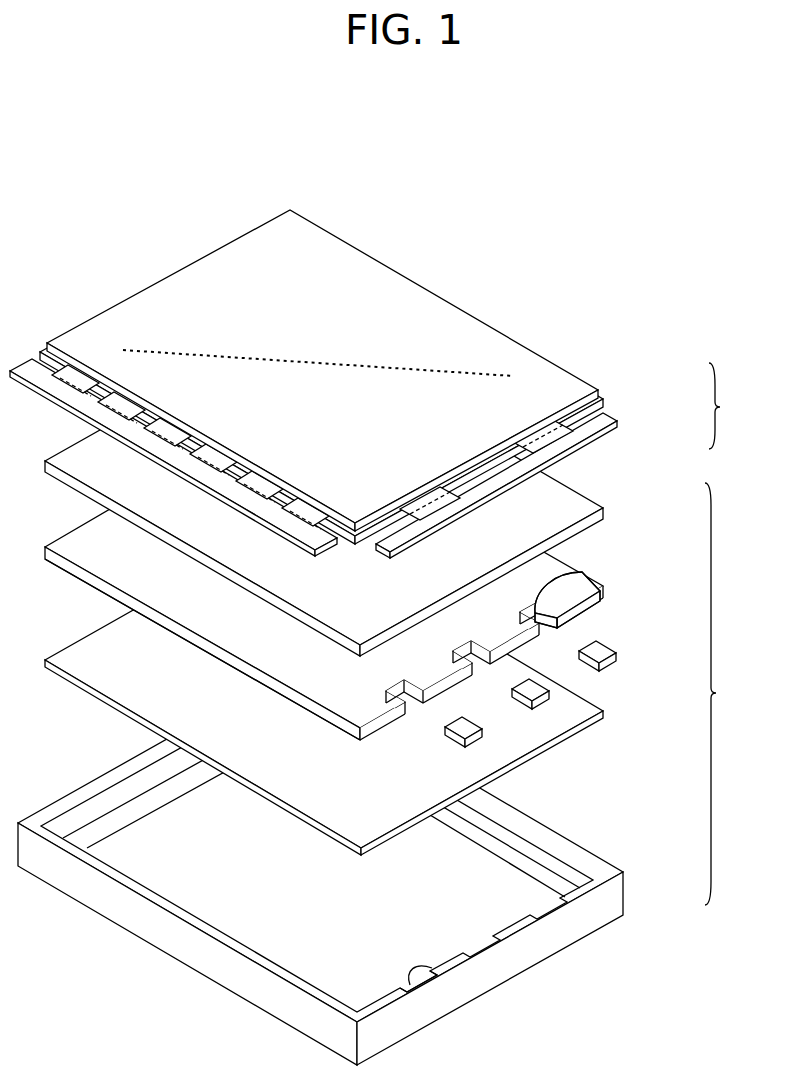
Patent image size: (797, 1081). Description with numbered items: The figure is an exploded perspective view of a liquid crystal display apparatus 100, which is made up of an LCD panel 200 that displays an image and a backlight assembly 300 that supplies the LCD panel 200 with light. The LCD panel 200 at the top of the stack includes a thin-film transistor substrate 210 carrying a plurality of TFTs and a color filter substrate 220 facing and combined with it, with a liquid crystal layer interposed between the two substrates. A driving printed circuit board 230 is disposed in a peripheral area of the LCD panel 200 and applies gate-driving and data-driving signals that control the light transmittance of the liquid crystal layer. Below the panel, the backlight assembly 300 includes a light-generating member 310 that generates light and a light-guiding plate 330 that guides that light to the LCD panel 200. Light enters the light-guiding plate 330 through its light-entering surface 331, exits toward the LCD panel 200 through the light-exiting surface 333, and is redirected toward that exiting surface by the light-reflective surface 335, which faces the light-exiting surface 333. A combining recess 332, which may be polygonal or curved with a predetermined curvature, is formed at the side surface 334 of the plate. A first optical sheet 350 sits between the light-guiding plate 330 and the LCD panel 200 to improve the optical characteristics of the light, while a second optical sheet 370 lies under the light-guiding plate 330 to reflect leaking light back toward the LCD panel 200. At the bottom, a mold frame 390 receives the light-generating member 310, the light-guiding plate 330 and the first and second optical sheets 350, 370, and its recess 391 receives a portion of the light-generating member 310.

The liquid crystal display apparatus 100 is at (390, 129).
The LCD panel 200 is at (732, 406).
The thin-film transistor substrate 210 is at (603, 399).
The color filter substrate 220 is at (570, 388).
The driving printed circuit board 230 is at (617, 426).
The backlight assembly 300 is at (730, 694).
The light-generating member 310 is at (617, 655).
The light-guiding plate 330 is at (601, 588).
The light-entering surface 331 is at (580, 571).
The combining recess 332 is at (558, 634).
The side surface 334 is at (604, 606).
The light-exiting surface 333 is at (95, 540).
The light-reflective surface 335 is at (103, 597).
The first optical sheet 350 is at (587, 500).
The second optical sheet 370 is at (604, 712).
The mold frame 390 is at (612, 900).
The recess 391 is at (432, 970).